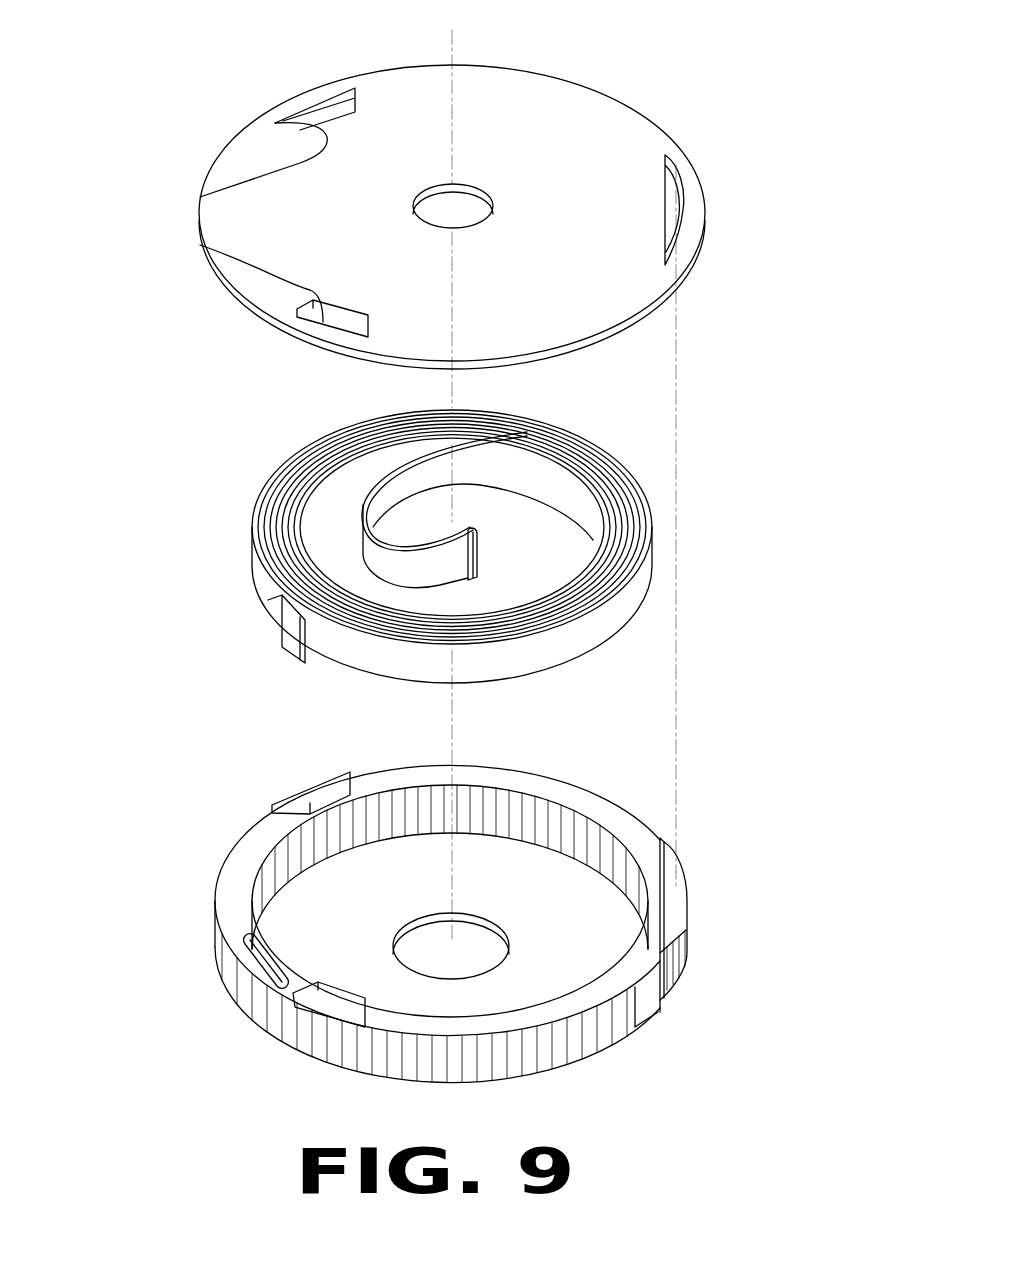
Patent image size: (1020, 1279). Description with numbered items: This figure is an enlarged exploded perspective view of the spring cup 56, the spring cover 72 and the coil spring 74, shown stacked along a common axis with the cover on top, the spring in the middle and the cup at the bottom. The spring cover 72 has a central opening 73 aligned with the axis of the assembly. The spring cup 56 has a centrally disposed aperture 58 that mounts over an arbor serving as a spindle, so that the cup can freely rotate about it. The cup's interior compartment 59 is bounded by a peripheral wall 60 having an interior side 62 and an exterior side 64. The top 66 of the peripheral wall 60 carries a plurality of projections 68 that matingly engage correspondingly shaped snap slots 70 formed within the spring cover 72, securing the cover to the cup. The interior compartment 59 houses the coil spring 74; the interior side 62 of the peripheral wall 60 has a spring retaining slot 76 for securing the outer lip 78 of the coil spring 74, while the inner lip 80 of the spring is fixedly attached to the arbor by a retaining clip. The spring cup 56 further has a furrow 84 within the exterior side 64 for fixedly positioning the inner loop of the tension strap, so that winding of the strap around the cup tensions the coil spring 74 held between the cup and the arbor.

The spring cup 56 is at (215, 883).
The centrally disposed aperture 58 is at (397, 957).
The interior compartment 59 is at (567, 873).
The peripheral wall 60 is at (590, 980).
The interior side 62 is at (545, 820).
The exterior side 64 is at (317, 1035).
The top 66 is at (262, 838).
The projections 68 is at (310, 795).
The snap slots 70 is at (680, 210).
The spring cover 72 is at (600, 117).
The cover hole 73 is at (438, 192).
The coil spring 74 is at (580, 437).
The spring retaining slot 76 is at (262, 963).
The outer lip 78 is at (290, 635).
The inner lip 80 is at (478, 548).
The furrow 84 is at (661, 893).